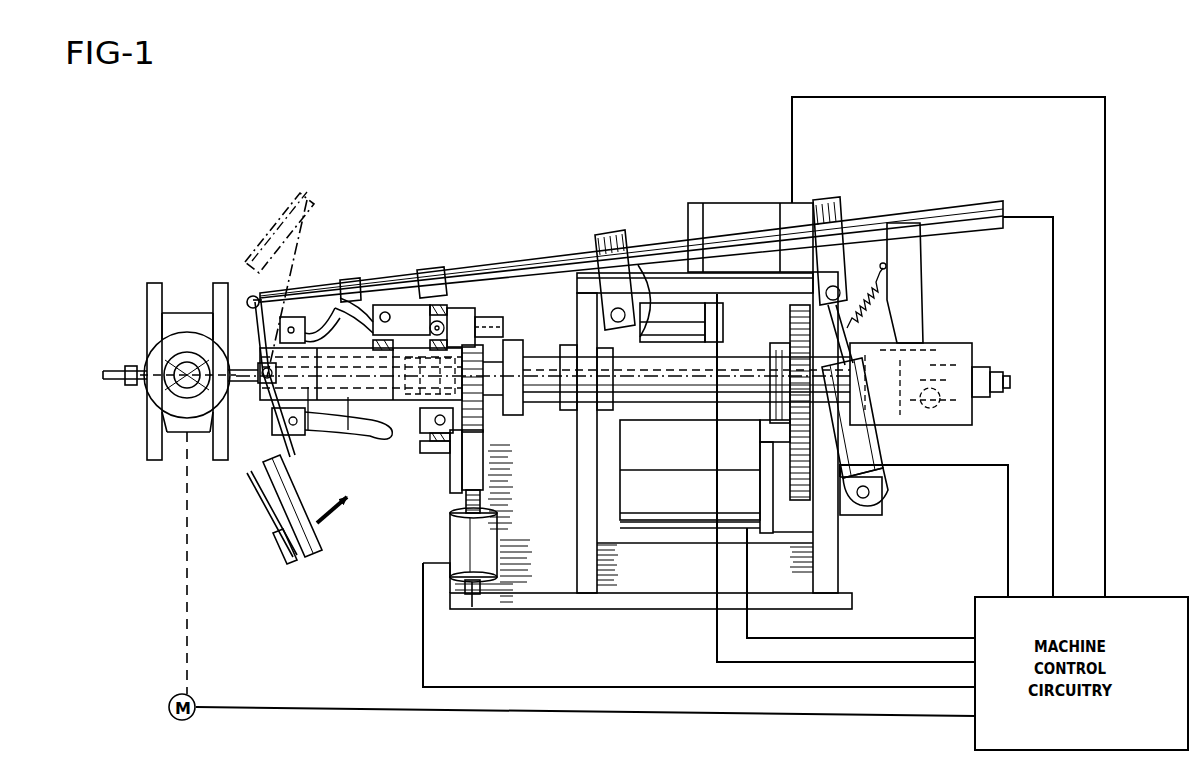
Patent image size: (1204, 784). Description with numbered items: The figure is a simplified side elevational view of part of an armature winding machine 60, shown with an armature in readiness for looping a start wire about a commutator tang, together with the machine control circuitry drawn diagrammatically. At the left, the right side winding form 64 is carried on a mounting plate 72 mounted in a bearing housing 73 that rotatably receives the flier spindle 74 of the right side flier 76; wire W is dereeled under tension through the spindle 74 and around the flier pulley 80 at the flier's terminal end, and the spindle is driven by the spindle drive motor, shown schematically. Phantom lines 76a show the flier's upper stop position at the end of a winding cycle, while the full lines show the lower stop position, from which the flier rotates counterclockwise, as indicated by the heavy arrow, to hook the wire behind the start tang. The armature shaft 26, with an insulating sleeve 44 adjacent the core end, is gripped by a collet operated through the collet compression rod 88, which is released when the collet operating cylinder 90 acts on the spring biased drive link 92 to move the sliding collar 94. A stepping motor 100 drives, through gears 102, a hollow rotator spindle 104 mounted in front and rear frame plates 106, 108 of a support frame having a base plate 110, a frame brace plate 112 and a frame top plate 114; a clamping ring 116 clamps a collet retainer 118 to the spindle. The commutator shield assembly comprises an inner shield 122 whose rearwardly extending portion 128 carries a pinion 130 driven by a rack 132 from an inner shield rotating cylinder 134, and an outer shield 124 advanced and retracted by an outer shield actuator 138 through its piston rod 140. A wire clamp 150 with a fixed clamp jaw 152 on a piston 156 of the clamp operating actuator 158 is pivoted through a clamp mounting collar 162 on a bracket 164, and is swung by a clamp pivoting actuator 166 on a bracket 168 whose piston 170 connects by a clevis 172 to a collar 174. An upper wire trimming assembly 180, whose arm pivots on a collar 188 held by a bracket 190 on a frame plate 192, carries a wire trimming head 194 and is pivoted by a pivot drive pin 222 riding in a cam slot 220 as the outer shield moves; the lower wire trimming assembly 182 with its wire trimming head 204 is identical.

The armature shaft 26 is at (103, 370).
The insulating sleeve 44 is at (130, 365).
The armature winding machine 60 is at (298, 168).
The right side winding form 64 is at (148, 285).
The mounting plate 72 is at (157, 425).
The bearing housing 73 is at (152, 383).
The flier spindle 74 is at (173, 385).
The right side flier 76 is at (305, 535).
The phantom lines 76a is at (273, 210).
The flier pulley 80 is at (275, 543).
The collet compression rod 88 is at (1010, 385).
The collet operating cylinder 90 is at (728, 212).
The spring biased drive link 92 is at (918, 263).
The sliding collar 94 is at (958, 355).
The stepping motor 100 is at (665, 497).
The gears 102 is at (797, 463).
The rotator spindle 104 is at (665, 395).
The front frame plate 106 is at (583, 563).
The rear frame plate 108 is at (832, 560).
The base plate 110 is at (655, 608).
The frame brace plate 112 is at (645, 577).
The frame top plate 114 is at (735, 290).
The clamping ring 116 is at (513, 400).
The collet retainer 118 is at (512, 365).
The inner shield 122 is at (315, 420).
The outer shield 124 is at (347, 428).
The rearwardly extending portion 128 is at (453, 357).
The pinion 130 is at (490, 443).
The rack 132 is at (483, 480).
The inner shield rotating cylinder 134 is at (453, 540).
The outer shield actuator 138 is at (714, 330).
The piston rod 140 is at (520, 313).
The wire clamp 150 is at (556, 242).
The fixed clamp jaw 152 is at (300, 300).
The piston 156 is at (408, 277).
The clamp operating actuator 158 is at (582, 252).
The clamp mounting collar 162 is at (613, 236).
The bracket 164 is at (657, 290).
The clamp pivoting actuator 166 is at (872, 437).
The bracket 168 is at (882, 500).
The piston 170 is at (853, 335).
The clevis 172 is at (873, 290).
The collar 174 is at (826, 210).
The upper wire trimming assembly 180 is at (365, 300).
The lower wire trimming assembly 182 is at (368, 450).
The collar 188 is at (420, 280).
The bracket 190 is at (435, 455).
The frame plate 192 is at (447, 500).
The wire trimming head 194 is at (257, 328).
The wire trimming head 204 is at (266, 418).
The cam slot 220 is at (337, 327).
The pivot drive pin 222 is at (384, 311).
The wire W is at (250, 492).